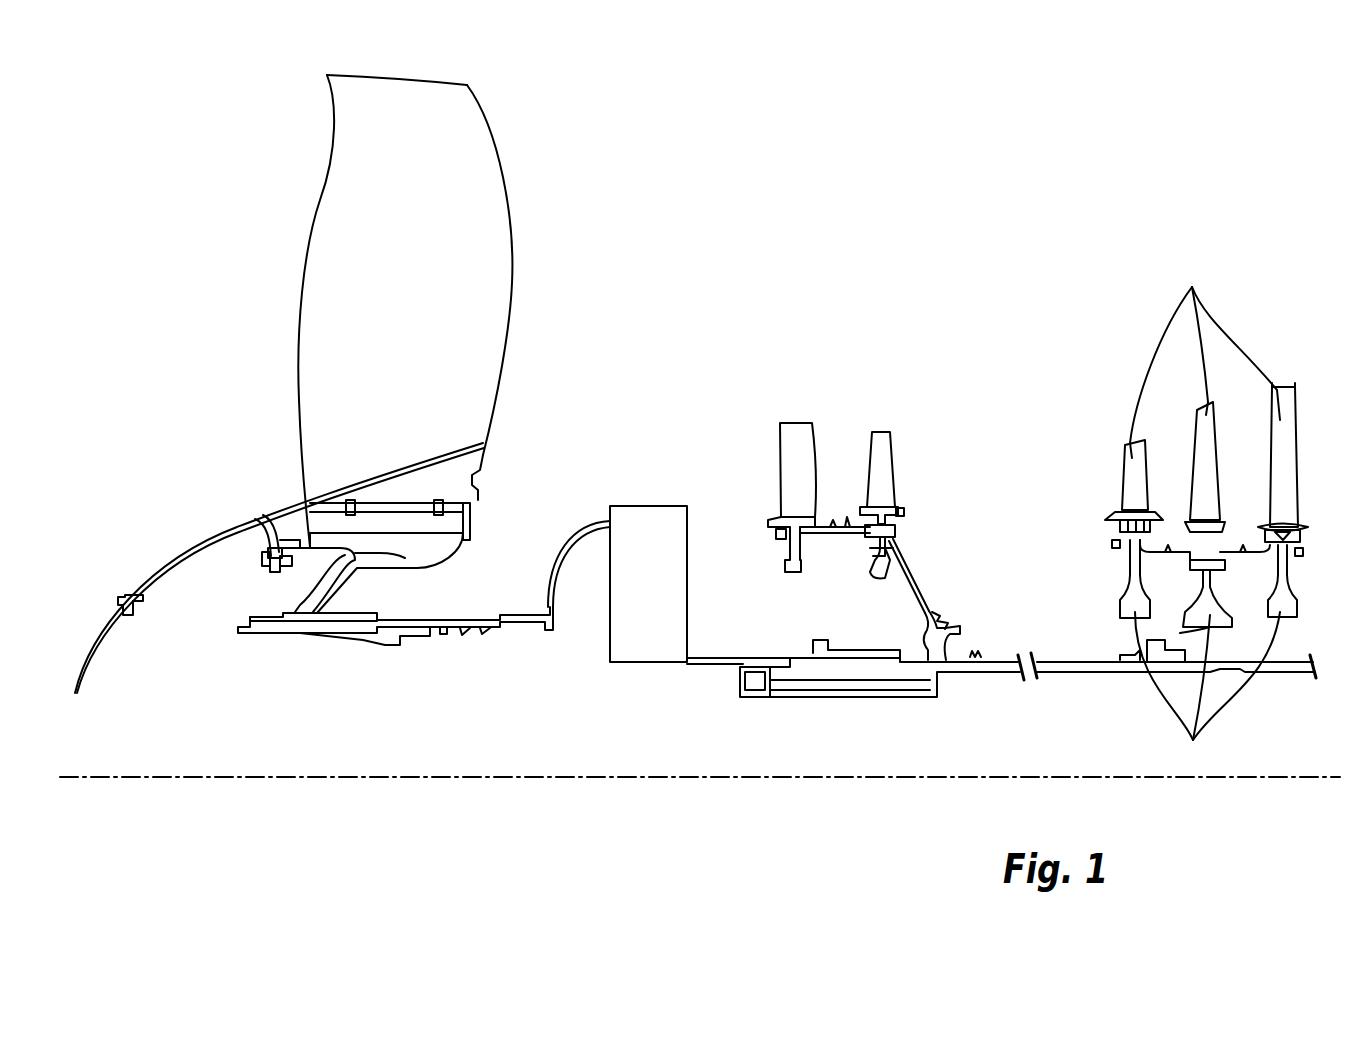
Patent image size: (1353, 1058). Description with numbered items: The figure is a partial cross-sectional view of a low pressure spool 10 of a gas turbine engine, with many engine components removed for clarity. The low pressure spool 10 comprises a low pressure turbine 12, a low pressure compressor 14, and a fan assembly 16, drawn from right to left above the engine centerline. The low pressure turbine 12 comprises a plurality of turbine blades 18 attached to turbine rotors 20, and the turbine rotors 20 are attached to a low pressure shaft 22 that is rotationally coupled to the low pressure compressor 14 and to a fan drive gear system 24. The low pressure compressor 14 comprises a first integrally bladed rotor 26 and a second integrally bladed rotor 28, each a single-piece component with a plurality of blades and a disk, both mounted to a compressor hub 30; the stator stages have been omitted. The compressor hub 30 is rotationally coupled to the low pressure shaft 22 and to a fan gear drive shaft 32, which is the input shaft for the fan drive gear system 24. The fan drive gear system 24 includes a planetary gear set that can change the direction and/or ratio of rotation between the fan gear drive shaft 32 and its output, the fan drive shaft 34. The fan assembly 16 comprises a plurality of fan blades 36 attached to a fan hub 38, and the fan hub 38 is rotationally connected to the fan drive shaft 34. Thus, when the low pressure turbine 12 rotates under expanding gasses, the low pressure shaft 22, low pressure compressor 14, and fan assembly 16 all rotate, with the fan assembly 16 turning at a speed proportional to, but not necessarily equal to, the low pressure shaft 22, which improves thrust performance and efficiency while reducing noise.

The low pressure spool 10 is at (914, 131).
The low pressure turbine 12 is at (1112, 339).
The low pressure compressor 14 is at (941, 427).
The fan assembly 16 is at (548, 213).
The turbine blades 18 is at (1206, 400).
The turbine rotors 20 is at (1207, 655).
The low pressure shaft 22 is at (1058, 661).
The fan drive gear system 24 is at (652, 505).
The first integrally bladed rotor 26 is at (800, 443).
The second integrally bladed rotor 28 is at (886, 447).
The compressor hub 30 is at (920, 595).
The fan gear drive shaft 32 is at (703, 656).
The fan drive shaft 34 is at (467, 617).
The fan blades 36 is at (497, 308).
The fan hub 38 is at (338, 565).